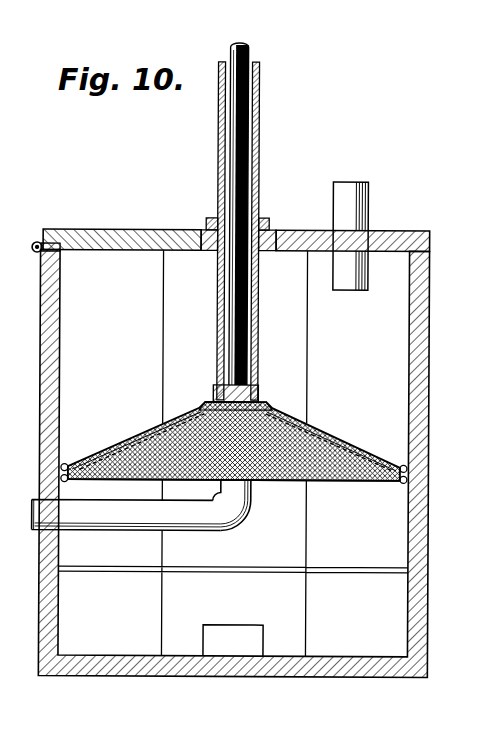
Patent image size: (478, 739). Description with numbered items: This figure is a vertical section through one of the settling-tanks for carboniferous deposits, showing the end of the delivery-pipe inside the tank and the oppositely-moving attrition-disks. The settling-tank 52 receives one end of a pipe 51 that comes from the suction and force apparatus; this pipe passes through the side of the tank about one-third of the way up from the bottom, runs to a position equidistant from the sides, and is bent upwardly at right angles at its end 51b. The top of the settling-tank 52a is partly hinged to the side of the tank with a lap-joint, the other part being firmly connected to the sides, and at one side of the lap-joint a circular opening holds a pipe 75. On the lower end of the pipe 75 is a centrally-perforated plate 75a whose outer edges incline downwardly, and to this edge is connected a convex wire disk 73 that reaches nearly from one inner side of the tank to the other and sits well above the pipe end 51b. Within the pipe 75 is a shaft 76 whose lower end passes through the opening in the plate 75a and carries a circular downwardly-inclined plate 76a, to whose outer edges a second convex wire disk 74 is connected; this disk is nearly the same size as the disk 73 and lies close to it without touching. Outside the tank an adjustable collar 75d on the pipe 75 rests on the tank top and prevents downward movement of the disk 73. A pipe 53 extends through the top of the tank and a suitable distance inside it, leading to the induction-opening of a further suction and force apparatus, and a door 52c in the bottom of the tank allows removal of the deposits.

The pipe 51 is at (126, 514).
The upwardly bent end of pipe 51b is at (252, 494).
The settling-tank 52 is at (233, 463).
The top of the settling-tank 52a is at (123, 231).
The door 52c is at (233, 640).
The pipe 53 is at (363, 236).
The convex wire disk 73 is at (121, 448).
The convex wire disk 74 is at (234, 484).
The pipe 75 is at (216, 342).
The centrally-perforated plate 75a is at (259, 393).
The adjustable collar 75d is at (208, 212).
The shaft 76 is at (232, 365).
The circular downwardly-inclined plate 76a is at (272, 413).